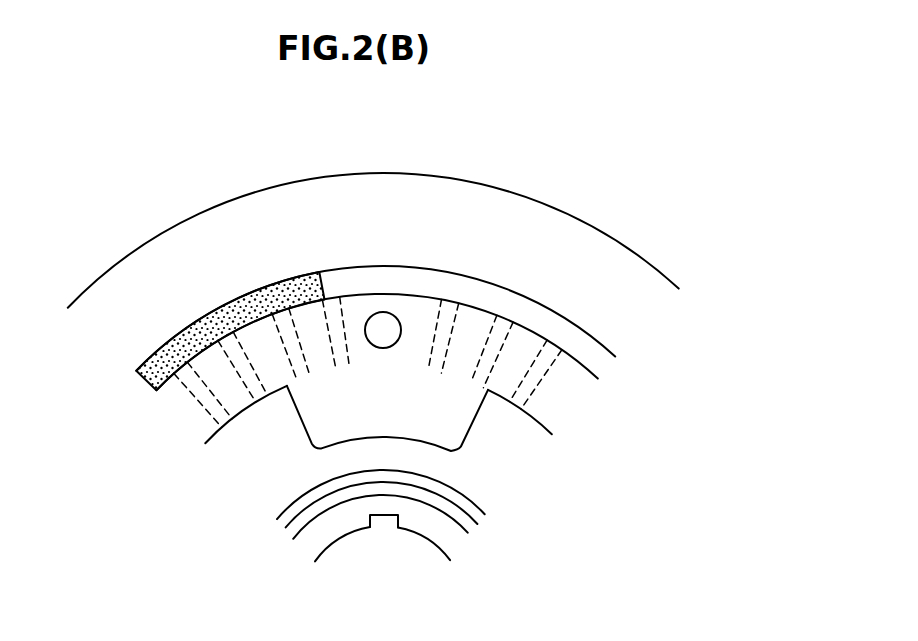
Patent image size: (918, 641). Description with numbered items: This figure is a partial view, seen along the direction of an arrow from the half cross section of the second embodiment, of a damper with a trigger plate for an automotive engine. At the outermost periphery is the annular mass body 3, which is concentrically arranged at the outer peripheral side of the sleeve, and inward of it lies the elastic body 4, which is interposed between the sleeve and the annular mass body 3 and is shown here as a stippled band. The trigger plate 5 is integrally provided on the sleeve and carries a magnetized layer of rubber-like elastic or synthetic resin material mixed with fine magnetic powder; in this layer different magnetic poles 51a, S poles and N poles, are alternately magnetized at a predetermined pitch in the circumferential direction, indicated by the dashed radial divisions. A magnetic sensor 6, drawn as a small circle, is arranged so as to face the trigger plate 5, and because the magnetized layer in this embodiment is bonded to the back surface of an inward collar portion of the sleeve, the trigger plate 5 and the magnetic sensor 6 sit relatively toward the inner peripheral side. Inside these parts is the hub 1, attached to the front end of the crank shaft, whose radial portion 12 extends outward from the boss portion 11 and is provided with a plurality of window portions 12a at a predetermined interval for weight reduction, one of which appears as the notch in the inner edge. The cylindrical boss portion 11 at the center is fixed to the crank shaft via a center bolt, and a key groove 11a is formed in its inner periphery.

The hub 1 is at (380, 344).
The annular mass body 3 is at (420, 215).
The elastic body 4 is at (180, 347).
The trigger plate 5 is at (527, 343).
The magnetic poles 51a is at (328, 303).
The magnetic sensor 6 is at (366, 308).
The boss portion 11 is at (313, 540).
The key groove 11a is at (385, 522).
The radial portion 12 is at (255, 470).
The window portions 12a is at (450, 415).